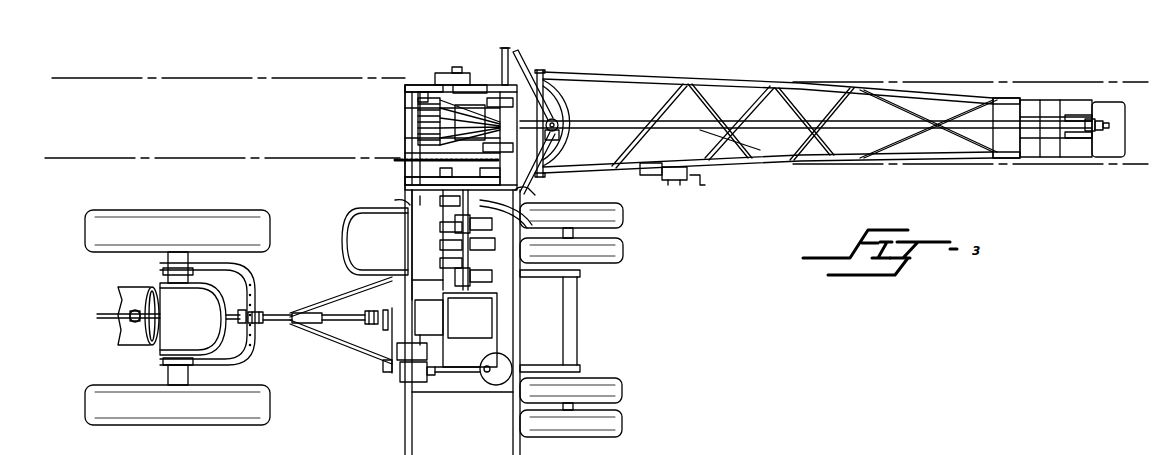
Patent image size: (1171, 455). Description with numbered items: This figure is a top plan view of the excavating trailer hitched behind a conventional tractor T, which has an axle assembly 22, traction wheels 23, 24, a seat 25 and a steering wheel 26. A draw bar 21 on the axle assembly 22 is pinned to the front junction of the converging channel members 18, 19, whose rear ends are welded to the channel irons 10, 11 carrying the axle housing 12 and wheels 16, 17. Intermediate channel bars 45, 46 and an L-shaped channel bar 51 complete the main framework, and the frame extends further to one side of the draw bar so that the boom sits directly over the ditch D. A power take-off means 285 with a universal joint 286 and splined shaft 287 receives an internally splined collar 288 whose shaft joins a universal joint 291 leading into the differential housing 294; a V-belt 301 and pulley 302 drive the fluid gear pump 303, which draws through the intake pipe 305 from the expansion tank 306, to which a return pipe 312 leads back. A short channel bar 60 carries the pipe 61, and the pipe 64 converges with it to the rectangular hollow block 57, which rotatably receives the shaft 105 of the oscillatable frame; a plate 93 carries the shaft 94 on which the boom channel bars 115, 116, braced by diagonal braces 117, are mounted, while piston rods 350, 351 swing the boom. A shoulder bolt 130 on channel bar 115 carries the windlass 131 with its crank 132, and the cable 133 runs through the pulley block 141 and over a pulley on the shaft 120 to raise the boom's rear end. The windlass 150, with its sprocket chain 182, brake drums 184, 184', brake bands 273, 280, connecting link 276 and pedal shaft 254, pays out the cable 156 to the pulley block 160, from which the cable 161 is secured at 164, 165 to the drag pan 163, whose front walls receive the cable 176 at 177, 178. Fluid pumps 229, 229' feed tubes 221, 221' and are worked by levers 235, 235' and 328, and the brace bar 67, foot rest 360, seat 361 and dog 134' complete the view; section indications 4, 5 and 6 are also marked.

The ditch D is at (246, 88).
The tractor T is at (122, 350).
The draw bar 21 is at (248, 357).
The axle assembly 22 is at (182, 260).
The traction wheel 23 is at (262, 425).
The traction wheel 24 is at (240, 214).
The seat 25 is at (166, 343).
The steering wheel 26 is at (152, 288).
The power take-off means 285 is at (234, 320).
The universal joint 286 is at (248, 324).
The splined shaft 287 is at (272, 312).
The internally splined collar 288 is at (312, 323).
The universal joint 291 is at (370, 311).
The V-belt 301 is at (386, 328).
The pulley 302 is at (383, 365).
The channel member 19 is at (340, 292).
The channel member 18 is at (340, 348).
The brake band 280 is at (405, 85).
The connecting link 276 is at (448, 73).
The shaft 254 is at (457, 67).
The brake band 273 is at (478, 85).
The windlass 150 is at (400, 108).
The cable 156 is at (405, 128).
The sprocket chain 182 is at (395, 160).
The brake drum 184 is at (430, 180).
The brake drum 184' is at (496, 172).
The brace bar 67 is at (449, 174).
The piston rod 350 is at (498, 101).
The piston rod 351 is at (496, 146).
The channel bar 60 is at (505, 48).
The pipe 61 is at (523, 60).
The intermediate channel bar 46 is at (537, 165).
The pipe 64 is at (540, 186).
The section line 6 is at (388, 48).
The section line 5 is at (372, 387).
The section line 4 is at (648, 207).
The shaft 105 is at (562, 138).
The rectangular hollow block 57 is at (555, 137).
The plate 93 is at (565, 104).
The shaft 94 is at (555, 94).
The pulley block 141 is at (594, 121).
The channel bar 116 is at (622, 78).
The channel bar 115 is at (594, 174).
The diagonal brace 117 is at (668, 106).
The cable 133 is at (872, 110).
The shoulder bolt 130 is at (666, 165).
The clamp block 134' is at (661, 178).
The windlass 131 is at (670, 185).
The crank 132 is at (705, 190).
The cable 176 is at (975, 102).
The securing point 178 is at (1006, 98).
The securing point 177 is at (1002, 158).
The drag pan 163 is at (1062, 158).
The pulley block 160 is at (1110, 106).
The shaft 120 is at (1085, 115).
The securing point 165 is at (1096, 102).
The securing point 164 is at (1097, 131).
The cable 161 is at (1106, 128).
The foot rest 360 is at (375, 241).
The seat 361 is at (385, 206).
The tube 221 is at (422, 195).
The tube 221' is at (481, 223).
The lever 235 is at (446, 230).
The lever 235' is at (434, 245).
The lever 328 is at (458, 262).
The pump 229 is at (571, 215).
The fluid pump 229' is at (571, 245).
The wheel 17 is at (624, 250).
The channel iron 10 is at (580, 274).
The axle housing 12 is at (578, 323).
The channel iron 11 is at (580, 368).
The intermediate channel bar 45 is at (520, 300).
The wheel 16 is at (624, 427).
The pipe 312 is at (497, 310).
The channel bar 51 is at (440, 340).
The differential housing 294 is at (428, 352).
The fluid gear pump 303 is at (412, 382).
The intake pipe 305 is at (458, 372).
The expansion tank 306 is at (498, 385).